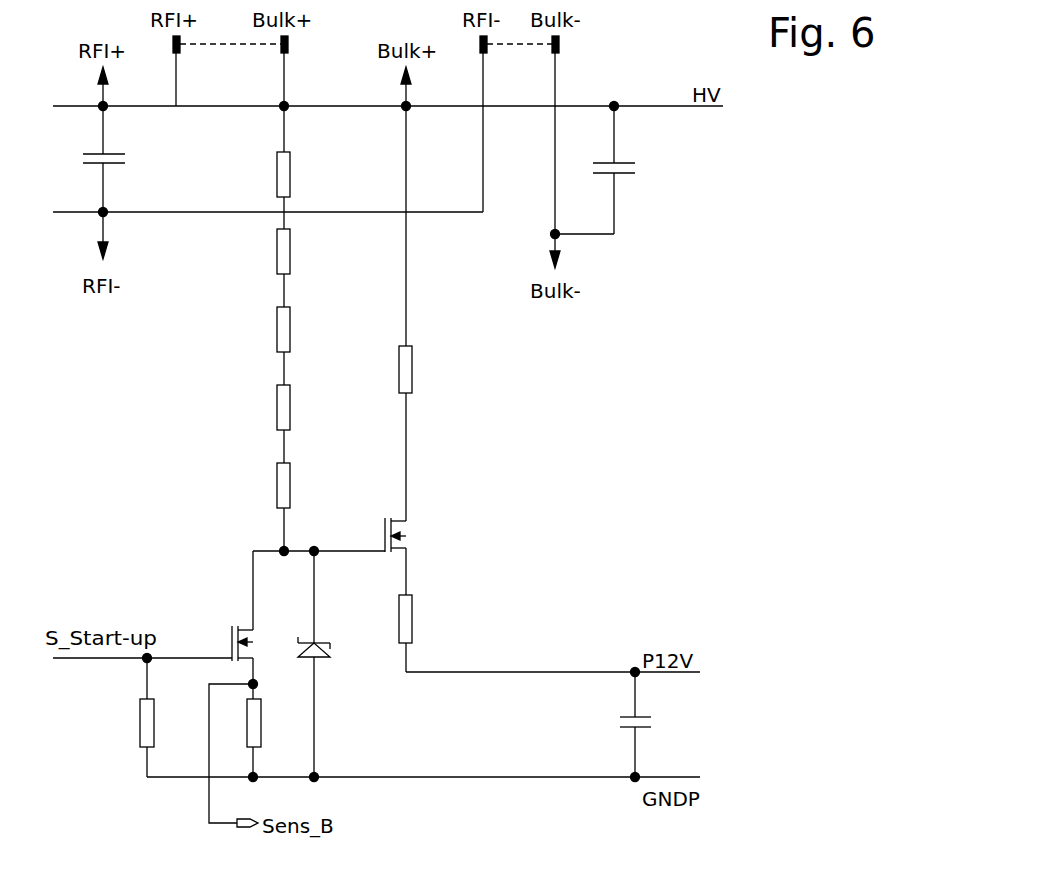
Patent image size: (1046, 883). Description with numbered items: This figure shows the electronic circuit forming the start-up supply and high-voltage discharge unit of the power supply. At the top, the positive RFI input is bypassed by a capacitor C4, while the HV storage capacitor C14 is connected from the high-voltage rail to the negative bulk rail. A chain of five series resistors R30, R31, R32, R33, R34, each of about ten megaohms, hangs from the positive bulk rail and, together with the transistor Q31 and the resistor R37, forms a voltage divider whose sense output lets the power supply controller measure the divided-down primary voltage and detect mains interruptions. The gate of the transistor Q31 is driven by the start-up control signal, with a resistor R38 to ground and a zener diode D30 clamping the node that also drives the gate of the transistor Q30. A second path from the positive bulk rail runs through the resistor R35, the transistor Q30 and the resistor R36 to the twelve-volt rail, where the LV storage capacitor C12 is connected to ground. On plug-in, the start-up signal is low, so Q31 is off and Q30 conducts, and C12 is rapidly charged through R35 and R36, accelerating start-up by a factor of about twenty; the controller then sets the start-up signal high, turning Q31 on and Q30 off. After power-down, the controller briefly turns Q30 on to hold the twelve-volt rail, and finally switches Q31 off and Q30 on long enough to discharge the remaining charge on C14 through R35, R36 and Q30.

The capacitor C4 is at (123, 159).
The HV storage capacitor C14 is at (704, 170).
The LV storage capacitor C12 is at (727, 724).
The resistor R30 is at (305, 174).
The resistor R31 is at (305, 251).
The resistor R32 is at (305, 329).
The resistor R33 is at (305, 407).
The resistor R34 is at (305, 485).
The resistor R35 is at (427, 369).
The resistor R36 is at (427, 619).
The resistor R37 is at (275, 723).
The resistor R38 is at (168, 723).
The transistor Q30 is at (418, 535).
The transistor Q31 is at (217, 625).
The zener diode D30 is at (329, 664).